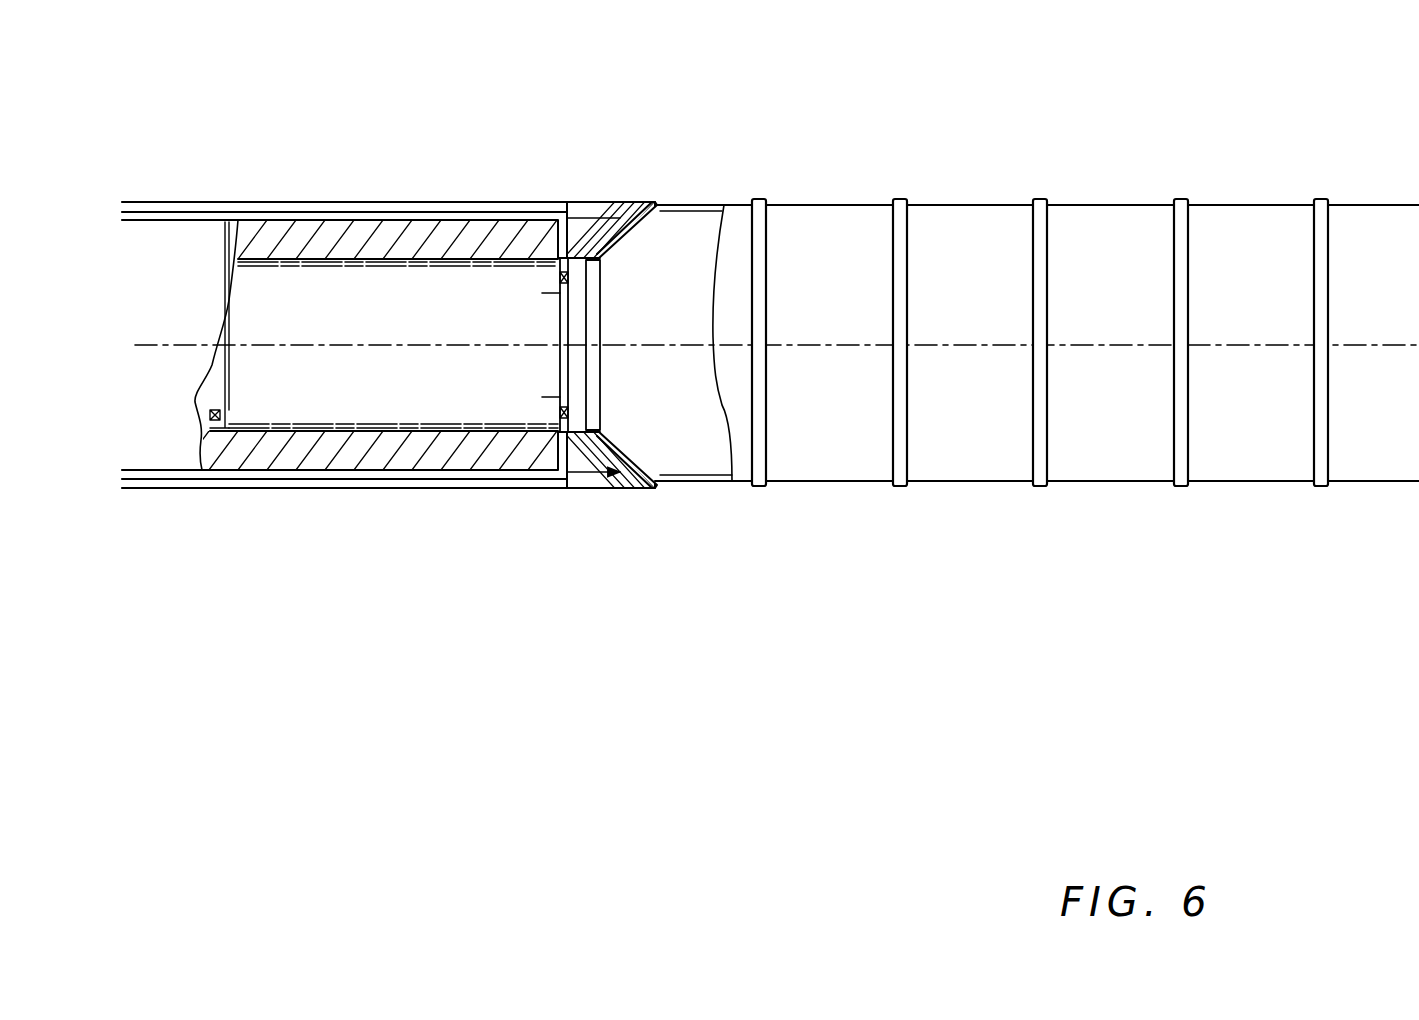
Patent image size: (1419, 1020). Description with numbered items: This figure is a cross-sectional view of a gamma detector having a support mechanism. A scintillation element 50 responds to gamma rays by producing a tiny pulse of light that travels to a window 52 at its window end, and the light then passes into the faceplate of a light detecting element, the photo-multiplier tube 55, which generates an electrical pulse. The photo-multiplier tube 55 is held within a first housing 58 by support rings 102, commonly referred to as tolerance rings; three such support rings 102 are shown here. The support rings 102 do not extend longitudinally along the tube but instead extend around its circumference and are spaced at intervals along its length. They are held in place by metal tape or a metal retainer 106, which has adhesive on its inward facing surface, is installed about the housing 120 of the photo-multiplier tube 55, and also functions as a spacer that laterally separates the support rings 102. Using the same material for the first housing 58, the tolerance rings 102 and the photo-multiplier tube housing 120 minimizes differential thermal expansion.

The scintillation element 50 is at (1138, 327).
The window 52 is at (567, 305).
The photo-multiplier tube 55 is at (410, 341).
The first housing 58 is at (510, 230).
The support ring 102 is at (395, 262).
The metal tape or retainer 106 is at (338, 432).
The photo-multiplier tube housing 120 is at (462, 430).